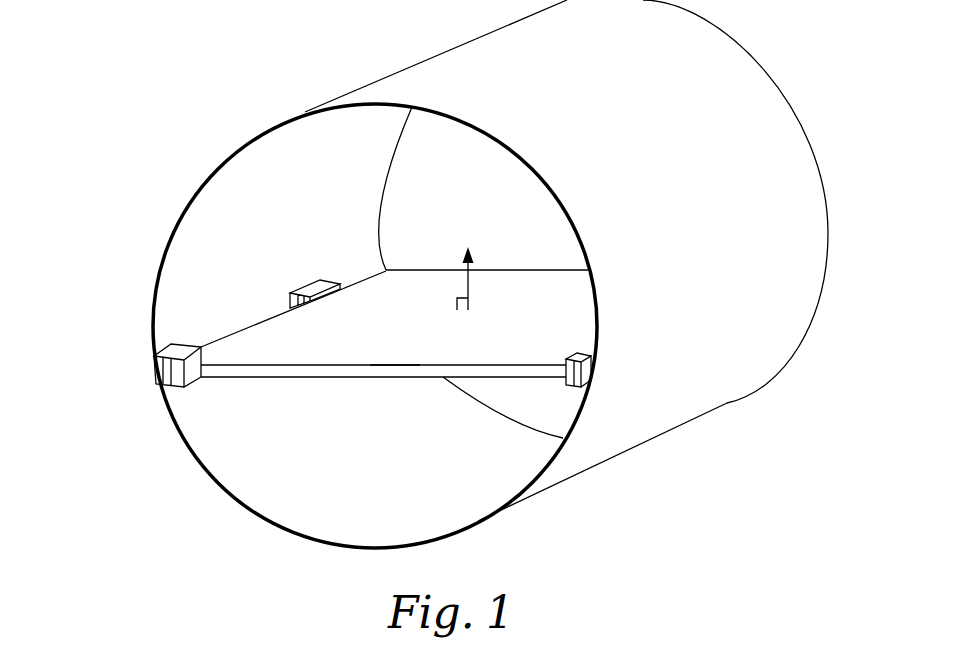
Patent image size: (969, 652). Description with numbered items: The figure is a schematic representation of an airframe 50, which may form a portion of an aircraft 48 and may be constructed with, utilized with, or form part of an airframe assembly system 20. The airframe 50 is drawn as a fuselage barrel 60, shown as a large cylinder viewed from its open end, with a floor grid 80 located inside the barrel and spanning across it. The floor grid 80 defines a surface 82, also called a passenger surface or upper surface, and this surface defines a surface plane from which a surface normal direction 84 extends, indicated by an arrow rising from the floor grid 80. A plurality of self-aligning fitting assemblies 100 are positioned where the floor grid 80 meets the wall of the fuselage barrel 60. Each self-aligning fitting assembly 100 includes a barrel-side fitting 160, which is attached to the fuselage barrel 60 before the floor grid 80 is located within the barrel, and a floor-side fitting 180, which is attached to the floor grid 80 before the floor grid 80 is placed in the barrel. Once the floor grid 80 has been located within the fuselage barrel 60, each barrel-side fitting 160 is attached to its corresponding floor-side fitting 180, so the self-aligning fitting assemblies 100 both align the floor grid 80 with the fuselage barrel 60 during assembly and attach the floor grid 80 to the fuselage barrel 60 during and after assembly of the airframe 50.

The airframe assembly system 20 is at (127, 82).
The aircraft 48 is at (122, 110).
The airframe 50 is at (122, 150).
The fuselage barrel 60 is at (242, 137).
The floor grid 80 is at (348, 378).
The surface 82 is at (372, 366).
The surface normal direction 84 is at (470, 283).
The self-aligning fitting assembly 100 is at (377, 329).
The barrel-side fitting 160 is at (371, 295).
The floor-side fitting 180 is at (320, 280).